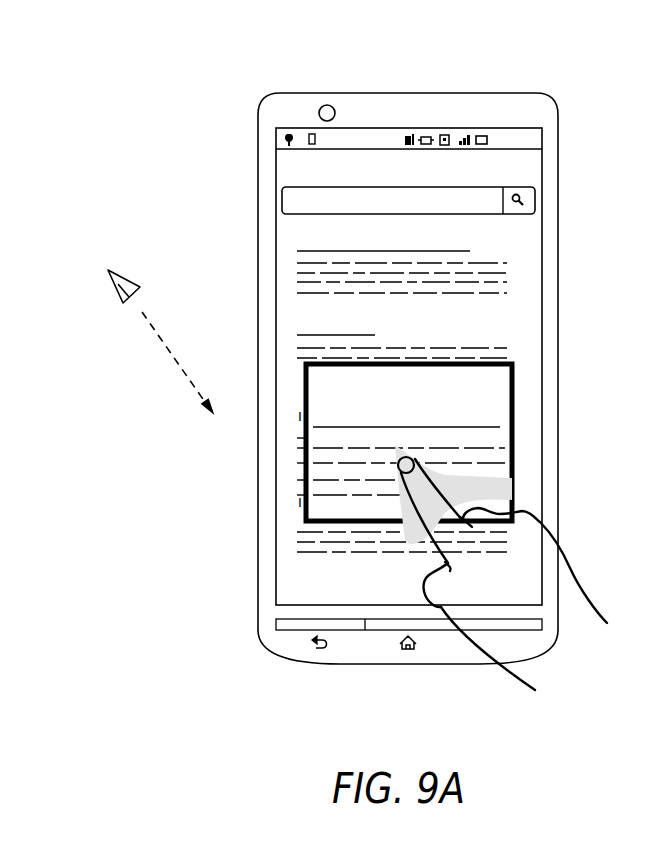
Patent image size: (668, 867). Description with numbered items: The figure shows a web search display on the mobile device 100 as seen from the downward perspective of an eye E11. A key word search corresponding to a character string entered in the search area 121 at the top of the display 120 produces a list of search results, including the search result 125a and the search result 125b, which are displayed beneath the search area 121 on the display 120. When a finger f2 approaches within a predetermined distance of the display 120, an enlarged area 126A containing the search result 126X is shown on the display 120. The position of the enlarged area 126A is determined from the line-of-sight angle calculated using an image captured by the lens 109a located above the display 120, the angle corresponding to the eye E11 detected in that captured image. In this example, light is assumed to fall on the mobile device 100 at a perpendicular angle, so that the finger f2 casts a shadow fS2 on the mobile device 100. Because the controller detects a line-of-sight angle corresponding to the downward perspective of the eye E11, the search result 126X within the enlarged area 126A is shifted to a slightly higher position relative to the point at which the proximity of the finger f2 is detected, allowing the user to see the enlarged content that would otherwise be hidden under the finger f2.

The mobile device 100 is at (425, 665).
The lens 109a is at (325, 105).
The display 120 is at (545, 250).
The search area 121 is at (282, 201).
The search result 125a is at (293, 247).
The search result 125b is at (293, 332).
The enlarged area 126A is at (513, 380).
The search result 126X is at (500, 413).
The finger f2 is at (418, 491).
The shadow fS2 is at (585, 562).
The eye E11 is at (127, 275).